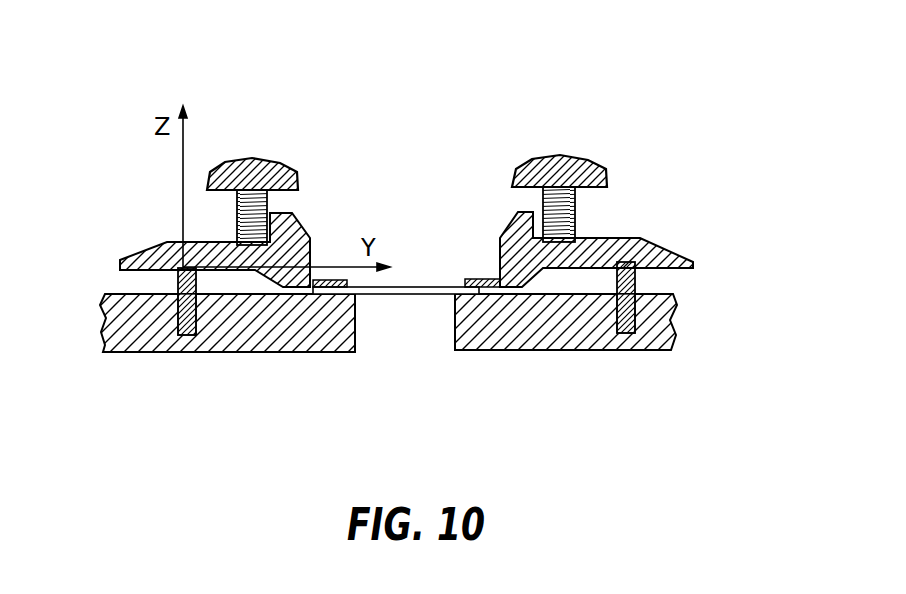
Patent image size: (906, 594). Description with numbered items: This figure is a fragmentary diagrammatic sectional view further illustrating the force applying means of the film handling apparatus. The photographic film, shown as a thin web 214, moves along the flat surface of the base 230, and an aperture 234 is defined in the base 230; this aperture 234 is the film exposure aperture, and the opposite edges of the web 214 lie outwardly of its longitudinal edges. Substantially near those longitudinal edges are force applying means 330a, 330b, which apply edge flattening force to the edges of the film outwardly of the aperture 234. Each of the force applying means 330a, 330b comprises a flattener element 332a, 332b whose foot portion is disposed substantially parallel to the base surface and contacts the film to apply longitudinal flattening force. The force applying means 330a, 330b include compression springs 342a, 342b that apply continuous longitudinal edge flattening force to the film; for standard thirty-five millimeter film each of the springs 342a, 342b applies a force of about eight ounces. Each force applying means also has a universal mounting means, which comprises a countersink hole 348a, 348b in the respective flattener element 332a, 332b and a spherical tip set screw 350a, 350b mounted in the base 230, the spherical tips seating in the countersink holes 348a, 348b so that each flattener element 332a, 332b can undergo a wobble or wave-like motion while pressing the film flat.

The thin web 214 is at (424, 287).
The base 230 is at (317, 352).
The aperture 234 is at (380, 330).
The force applying means 330a is at (257, 158).
The force applying means 330b is at (557, 157).
The flattener element 332a is at (147, 248).
The flattener element 332b is at (673, 245).
The compression spring 342a is at (268, 202).
The compression spring 342b is at (576, 203).
The countersink hole 348a is at (177, 282).
The countersink hole 348b is at (640, 246).
The spherical tip set screw 350a is at (196, 318).
The spherical tip set screw 350b is at (620, 332).